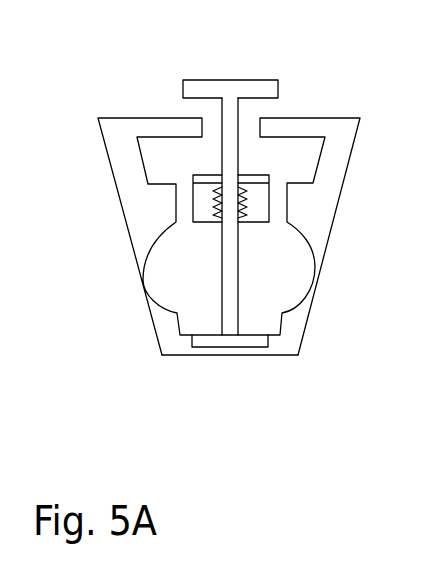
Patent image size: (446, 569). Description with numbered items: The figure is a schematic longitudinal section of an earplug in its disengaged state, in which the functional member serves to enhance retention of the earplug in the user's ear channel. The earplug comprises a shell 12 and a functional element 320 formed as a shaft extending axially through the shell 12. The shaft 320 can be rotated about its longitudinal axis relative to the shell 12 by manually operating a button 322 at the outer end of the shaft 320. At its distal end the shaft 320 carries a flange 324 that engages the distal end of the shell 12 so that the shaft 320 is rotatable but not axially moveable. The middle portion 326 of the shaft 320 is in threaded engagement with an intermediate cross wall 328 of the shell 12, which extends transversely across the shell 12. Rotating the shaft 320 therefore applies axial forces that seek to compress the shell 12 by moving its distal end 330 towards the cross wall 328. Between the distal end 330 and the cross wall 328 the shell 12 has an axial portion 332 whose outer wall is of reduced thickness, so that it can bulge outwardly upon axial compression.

The shell 12 is at (343, 133).
The functional element 320 is at (220, 159).
The button 322 is at (250, 90).
The flange 324 is at (253, 342).
The middle portion 326 is at (209, 199).
The intermediate cross wall 328 is at (257, 203).
The distal end 330 is at (208, 350).
The axial portion 332 is at (138, 291).